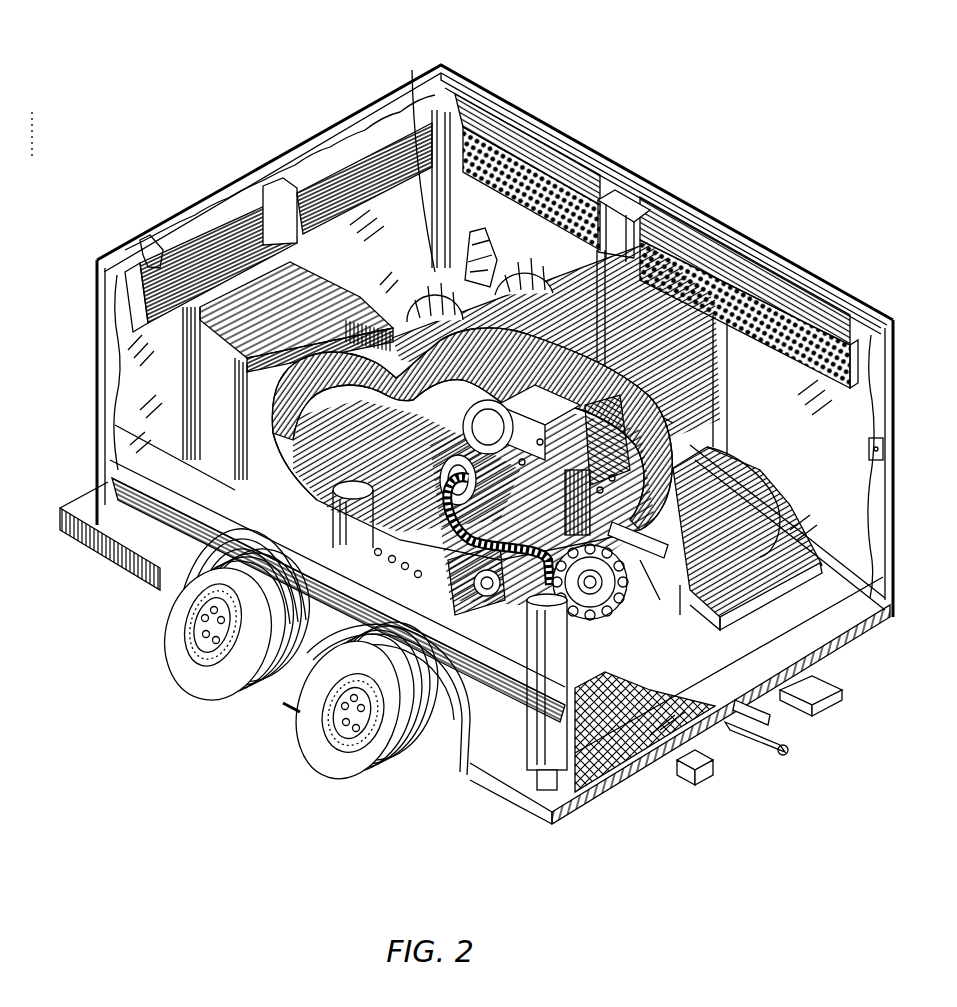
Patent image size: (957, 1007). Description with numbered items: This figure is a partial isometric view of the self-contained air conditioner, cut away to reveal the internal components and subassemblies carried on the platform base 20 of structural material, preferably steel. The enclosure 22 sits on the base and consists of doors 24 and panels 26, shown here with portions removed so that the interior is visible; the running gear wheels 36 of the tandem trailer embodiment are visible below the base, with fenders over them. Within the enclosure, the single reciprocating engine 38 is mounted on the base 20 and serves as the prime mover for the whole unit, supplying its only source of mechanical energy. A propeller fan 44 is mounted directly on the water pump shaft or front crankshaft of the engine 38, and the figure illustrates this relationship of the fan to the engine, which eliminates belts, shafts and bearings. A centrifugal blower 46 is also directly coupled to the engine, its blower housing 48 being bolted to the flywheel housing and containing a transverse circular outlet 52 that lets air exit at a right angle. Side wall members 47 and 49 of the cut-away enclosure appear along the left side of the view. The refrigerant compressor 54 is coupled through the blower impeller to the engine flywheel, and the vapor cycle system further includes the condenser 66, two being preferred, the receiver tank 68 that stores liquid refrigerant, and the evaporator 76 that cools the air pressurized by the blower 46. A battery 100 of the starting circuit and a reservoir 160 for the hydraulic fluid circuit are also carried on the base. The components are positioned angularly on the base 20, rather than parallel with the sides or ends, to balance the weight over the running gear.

The platform base 20 is at (473, 795).
The enclosure 22 is at (733, 233).
The doors 24 is at (563, 137).
The panels 26 is at (360, 215).
The wheels 36 is at (207, 687).
The reciprocating engine 38 is at (863, 313).
The propeller fan 44 is at (593, 803).
The centrifugal blower 46 is at (710, 230).
The side panel 47 is at (280, 440).
The blower housing 48 is at (293, 703).
The lower side panel 49 is at (277, 440).
The transverse circular outlet 52 is at (127, 560).
The refrigerant compressor 54 is at (412, 70).
The condenser 66 is at (640, 182).
The receiver tank 68 is at (190, 670).
The evaporator 76 is at (277, 318).
The battery 100 is at (370, 783).
The reservoir 160 is at (263, 200).